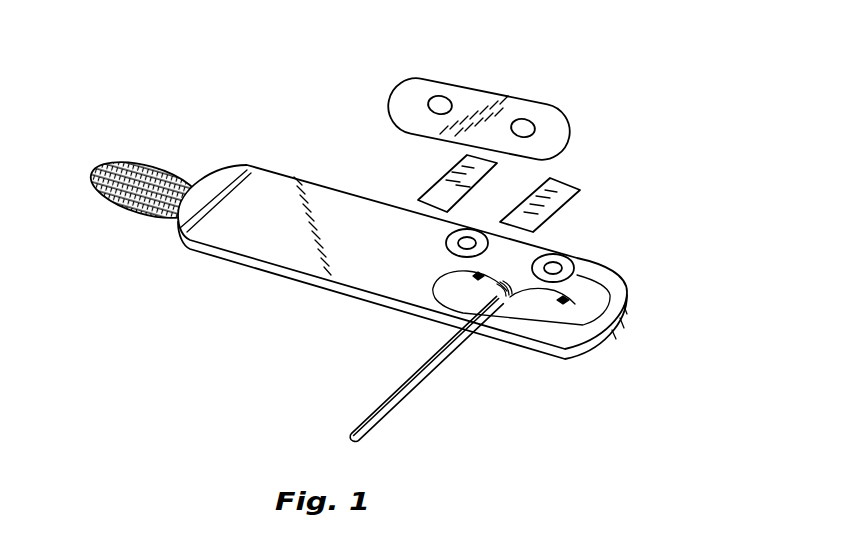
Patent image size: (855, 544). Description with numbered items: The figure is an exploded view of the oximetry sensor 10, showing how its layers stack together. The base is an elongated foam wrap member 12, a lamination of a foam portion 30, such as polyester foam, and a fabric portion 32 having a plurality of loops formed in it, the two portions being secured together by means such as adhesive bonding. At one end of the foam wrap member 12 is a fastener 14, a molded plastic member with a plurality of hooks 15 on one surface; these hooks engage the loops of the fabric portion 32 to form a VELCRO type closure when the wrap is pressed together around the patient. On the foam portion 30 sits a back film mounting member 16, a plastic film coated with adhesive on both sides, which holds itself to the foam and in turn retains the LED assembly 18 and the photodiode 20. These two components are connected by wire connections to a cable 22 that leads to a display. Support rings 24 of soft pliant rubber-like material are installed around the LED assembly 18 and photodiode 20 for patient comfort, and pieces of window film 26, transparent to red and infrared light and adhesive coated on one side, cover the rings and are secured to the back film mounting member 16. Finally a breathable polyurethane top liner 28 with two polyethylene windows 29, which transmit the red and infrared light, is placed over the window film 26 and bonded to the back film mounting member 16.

The oximetry sensor 10 is at (645, 244).
The foam wrap member 12 is at (242, 235).
The fastener 14 is at (105, 203).
The hooks 15 is at (147, 166).
The back film mounting member 16 is at (587, 302).
The LED assembly 18 is at (563, 302).
The photodiode 20 is at (435, 290).
The cable 22 is at (443, 365).
The support rings 24 is at (577, 262).
The window film 26 is at (437, 184).
The top liner 28 is at (503, 93).
The polyethylene windows 29 is at (443, 100).
The foam portion 30 is at (272, 193).
The fabric portion 32 is at (287, 277).